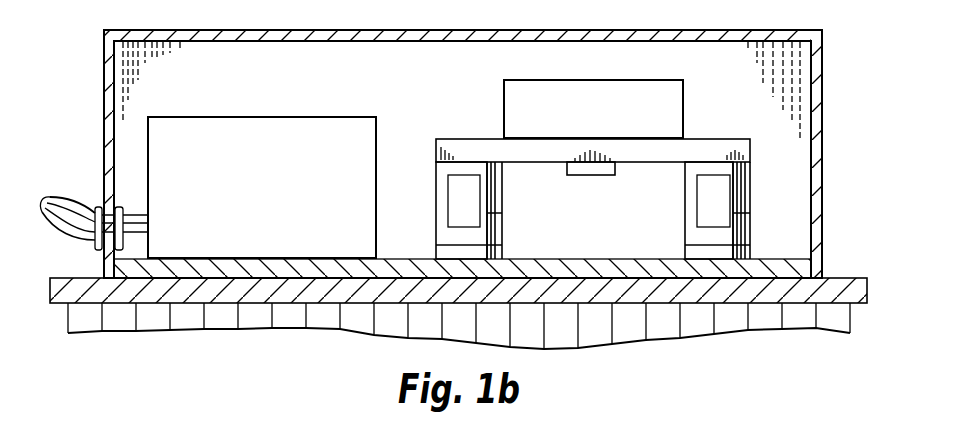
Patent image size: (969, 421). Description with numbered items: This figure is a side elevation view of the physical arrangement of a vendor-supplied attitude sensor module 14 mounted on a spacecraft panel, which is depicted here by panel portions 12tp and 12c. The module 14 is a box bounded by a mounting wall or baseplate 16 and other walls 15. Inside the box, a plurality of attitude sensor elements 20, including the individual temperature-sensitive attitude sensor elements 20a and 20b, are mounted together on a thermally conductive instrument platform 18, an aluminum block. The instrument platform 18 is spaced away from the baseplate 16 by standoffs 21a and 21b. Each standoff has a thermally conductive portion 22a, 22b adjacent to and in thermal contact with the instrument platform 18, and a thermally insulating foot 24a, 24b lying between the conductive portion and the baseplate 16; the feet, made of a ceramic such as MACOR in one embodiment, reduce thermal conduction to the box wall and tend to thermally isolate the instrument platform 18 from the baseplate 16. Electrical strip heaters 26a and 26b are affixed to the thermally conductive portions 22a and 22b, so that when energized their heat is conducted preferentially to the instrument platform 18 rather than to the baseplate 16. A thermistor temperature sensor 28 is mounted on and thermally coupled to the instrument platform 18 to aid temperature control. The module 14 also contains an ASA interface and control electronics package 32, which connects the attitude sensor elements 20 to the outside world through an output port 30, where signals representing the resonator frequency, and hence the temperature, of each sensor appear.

The spacecraft top panel 12tp is at (856, 278).
The honeycomb core of panel 12c is at (178, 333).
The attitude sensor module 14 is at (425, 133).
The walls 15 is at (104, 91).
The mounting wall or baseplate 16 is at (399, 262).
The instrument platform 18 is at (730, 139).
The attitude sensor elements 20 is at (486, 66).
The attitude sensor element 20a is at (593, 93).
The attitude sensor element 20b is at (651, 80).
The standoff 21a is at (435, 162).
The standoff 21b is at (755, 162).
The thermally conductive portion 22a is at (502, 180).
The thermally conductive portion 22b is at (685, 180).
The thermally insulating foot 24a is at (502, 246).
The thermally insulating foot 24b is at (685, 246).
The electrical strip heater 26a is at (502, 213).
The electrical strip heater 26b is at (697, 212).
The thermistor temperature sensor 28 is at (598, 176).
The outside-world output port 30 is at (89, 206).
The ASA interface and control electronic package 32 is at (278, 117).